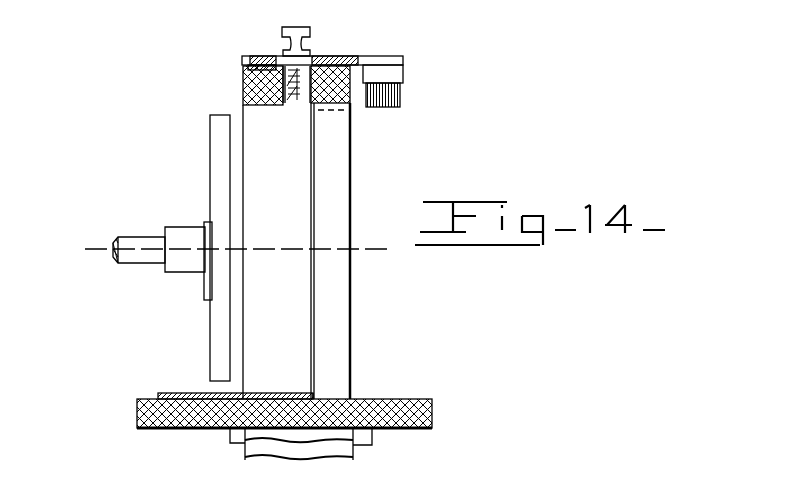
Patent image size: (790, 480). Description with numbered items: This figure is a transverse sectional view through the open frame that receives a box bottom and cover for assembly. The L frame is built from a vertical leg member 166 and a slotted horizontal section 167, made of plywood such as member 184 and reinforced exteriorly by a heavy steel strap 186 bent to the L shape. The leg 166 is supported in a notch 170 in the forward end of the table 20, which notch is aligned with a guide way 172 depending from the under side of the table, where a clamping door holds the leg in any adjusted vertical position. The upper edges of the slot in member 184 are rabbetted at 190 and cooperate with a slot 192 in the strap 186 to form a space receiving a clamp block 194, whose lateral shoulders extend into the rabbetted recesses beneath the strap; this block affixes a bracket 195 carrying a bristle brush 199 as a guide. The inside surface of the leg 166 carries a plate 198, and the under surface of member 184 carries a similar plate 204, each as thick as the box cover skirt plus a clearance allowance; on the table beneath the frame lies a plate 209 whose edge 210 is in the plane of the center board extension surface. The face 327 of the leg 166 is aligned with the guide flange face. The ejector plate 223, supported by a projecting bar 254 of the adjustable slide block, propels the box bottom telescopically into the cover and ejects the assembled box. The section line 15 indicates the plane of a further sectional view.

The section line 15- 15 is at (66, 236).
The table 20 is at (432, 405).
The vertical leg member 166 is at (338, 318).
The slotted horizontal section 167 is at (352, 104).
The notch 170 is at (215, 430).
The guide way 172 is at (372, 432).
The plywood member 184 is at (242, 80).
The heavy steel strap 186 is at (249, 62).
The rabbetted edges 190 is at (342, 60).
The slot 192 is at (309, 58).
The clamp block 194 is at (306, 100).
The bracket 195 is at (297, 28).
The plate 198 is at (300, 298).
The bristle brush 199 is at (398, 93).
The plate 204 is at (258, 105).
The plate 209 is at (185, 394).
The edge 210 is at (315, 392).
The ejector plate 223 is at (218, 153).
The projecting bar 254 is at (140, 262).
The face 327 is at (335, 176).